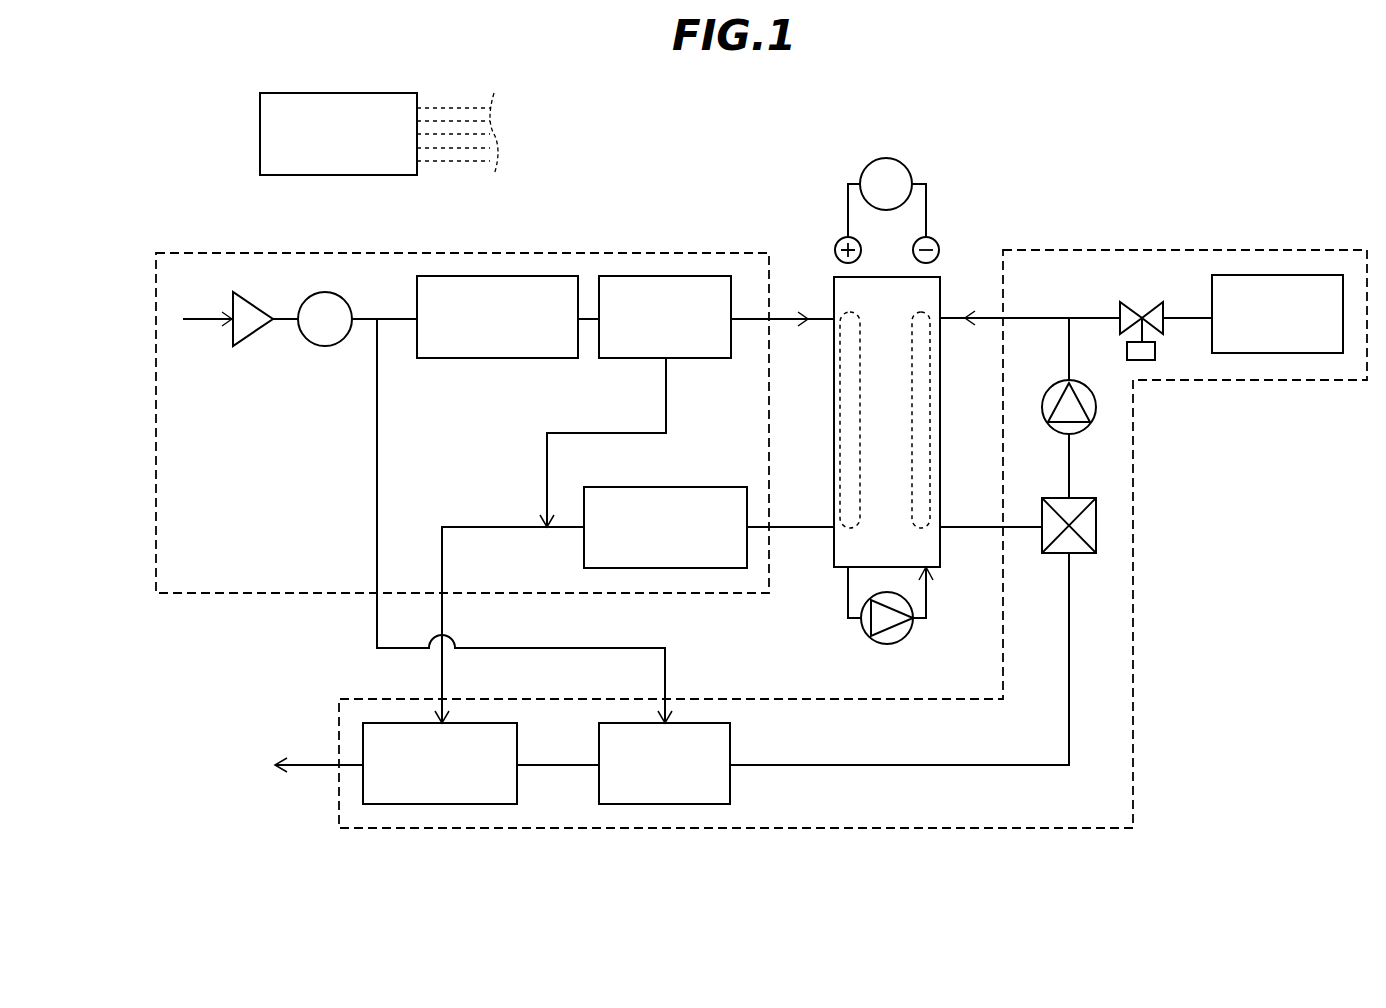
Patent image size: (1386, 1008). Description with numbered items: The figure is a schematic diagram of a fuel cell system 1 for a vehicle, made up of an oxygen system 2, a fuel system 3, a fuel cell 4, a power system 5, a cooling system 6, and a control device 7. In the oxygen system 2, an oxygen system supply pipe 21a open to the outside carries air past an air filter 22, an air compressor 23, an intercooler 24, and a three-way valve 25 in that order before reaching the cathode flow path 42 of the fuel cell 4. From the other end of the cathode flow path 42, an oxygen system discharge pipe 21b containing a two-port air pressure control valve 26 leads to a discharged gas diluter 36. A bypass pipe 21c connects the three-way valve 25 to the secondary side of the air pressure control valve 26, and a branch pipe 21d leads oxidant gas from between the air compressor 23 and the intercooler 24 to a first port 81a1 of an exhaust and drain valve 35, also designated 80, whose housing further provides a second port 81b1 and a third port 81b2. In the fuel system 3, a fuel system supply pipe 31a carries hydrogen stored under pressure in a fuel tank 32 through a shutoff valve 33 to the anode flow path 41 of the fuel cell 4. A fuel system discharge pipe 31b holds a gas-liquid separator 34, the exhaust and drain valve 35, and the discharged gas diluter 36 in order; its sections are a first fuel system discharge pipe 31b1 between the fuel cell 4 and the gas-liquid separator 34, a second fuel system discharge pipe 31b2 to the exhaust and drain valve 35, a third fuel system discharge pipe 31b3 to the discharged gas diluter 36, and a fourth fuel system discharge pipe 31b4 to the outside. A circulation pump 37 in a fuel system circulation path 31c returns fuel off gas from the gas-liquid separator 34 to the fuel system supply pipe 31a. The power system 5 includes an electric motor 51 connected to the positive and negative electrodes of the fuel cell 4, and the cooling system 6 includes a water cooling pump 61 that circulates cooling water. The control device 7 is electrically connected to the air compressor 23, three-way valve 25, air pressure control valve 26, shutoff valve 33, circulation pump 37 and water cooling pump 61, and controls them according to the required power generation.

The fuel cell system 1 is at (114, 118).
The oxygen system 2 is at (182, 240).
The fuel system 3 is at (1043, 248).
The fuel cell 4 is at (886, 379).
The power system 5 is at (893, 195).
The cooling system 6 is at (890, 625).
The control device 7 is at (324, 93).
The oxygen system supply pipe 21a is at (389, 319).
The oxygen system discharge pipe 21b is at (442, 548).
The bypass pipe 21c is at (545, 485).
The branch pipe 21d is at (377, 482).
The air filter 22 is at (253, 335).
The air compressor 23 is at (331, 346).
The intercooler 24 is at (476, 358).
The three-way valve 25 is at (658, 276).
The air pressure control valve 26 is at (690, 568).
The fuel system supply pipe 31a is at (1183, 316).
The fuel system discharge pipe 31b is at (1072, 698).
The first fuel system discharge pipe 31b1 is at (975, 530).
The second fuel system discharge pipe 31b2 is at (1069, 620).
The third fuel system discharge pipe 31b3 is at (525, 766).
The fourth fuel system discharge pipe 31b4 is at (318, 766).
The fuel system circulation path 31c is at (1070, 460).
The fuel tank 32 is at (1280, 275).
The shutoff valve 33 is at (1133, 300).
The gas-liquid separator 34 is at (1097, 527).
The exhaust and drain valve 35 is at (664, 803).
The exhaust and drain valve 80 is at (665, 804).
The discharged gas diluter 36 is at (440, 804).
The circulation pump 37 is at (1097, 405).
The anode flow path 41 is at (912, 460).
The cathode flow path 42 is at (856, 460).
The electric motor 51 is at (893, 160).
The water cooling pump 61 is at (892, 645).
The first port 81a1 is at (655, 705).
The second port 81b1 is at (733, 766).
The third port 81b2 is at (597, 766).